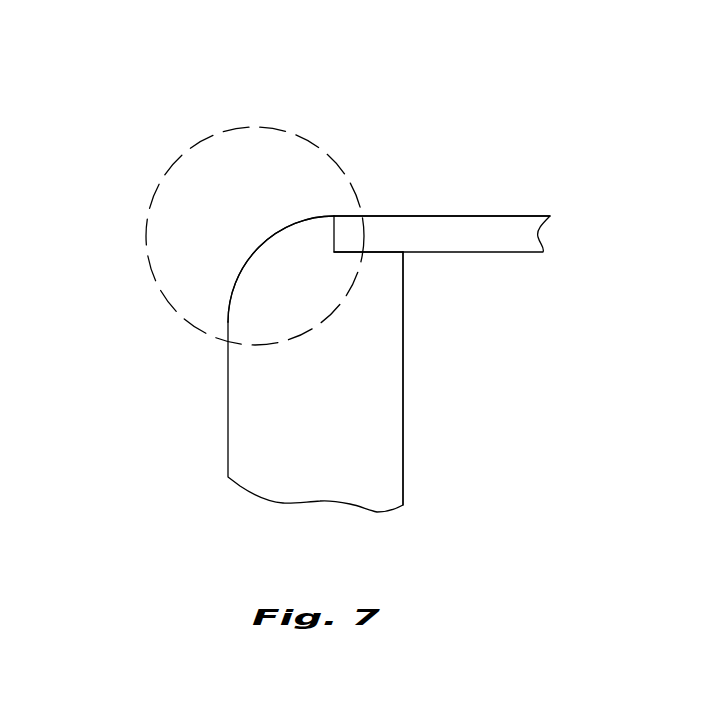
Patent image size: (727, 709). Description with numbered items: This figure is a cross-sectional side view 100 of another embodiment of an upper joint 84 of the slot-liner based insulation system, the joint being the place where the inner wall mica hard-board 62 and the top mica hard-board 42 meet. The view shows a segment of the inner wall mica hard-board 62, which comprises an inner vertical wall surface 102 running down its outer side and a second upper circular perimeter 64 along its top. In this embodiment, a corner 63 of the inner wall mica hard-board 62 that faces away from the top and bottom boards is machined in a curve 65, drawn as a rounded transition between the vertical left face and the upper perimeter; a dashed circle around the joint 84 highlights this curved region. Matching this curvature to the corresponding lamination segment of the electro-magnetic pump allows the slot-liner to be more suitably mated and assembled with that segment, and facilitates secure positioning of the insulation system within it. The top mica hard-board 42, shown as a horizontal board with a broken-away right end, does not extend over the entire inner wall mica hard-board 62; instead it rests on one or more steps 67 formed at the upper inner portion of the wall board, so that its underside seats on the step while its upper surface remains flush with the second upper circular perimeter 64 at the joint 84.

The cross-sectional side view 100 is at (478, 108).
The top mica hard-board 42 is at (515, 225).
The inner wall mica hard-board 62 is at (403, 457).
The corner 63 is at (240, 273).
The second upper circular perimeter 64 is at (385, 216).
The curve 65 is at (273, 235).
The step 67 is at (374, 253).
The upper joint 84 is at (158, 285).
The inner vertical wall surface 102 is at (405, 331).